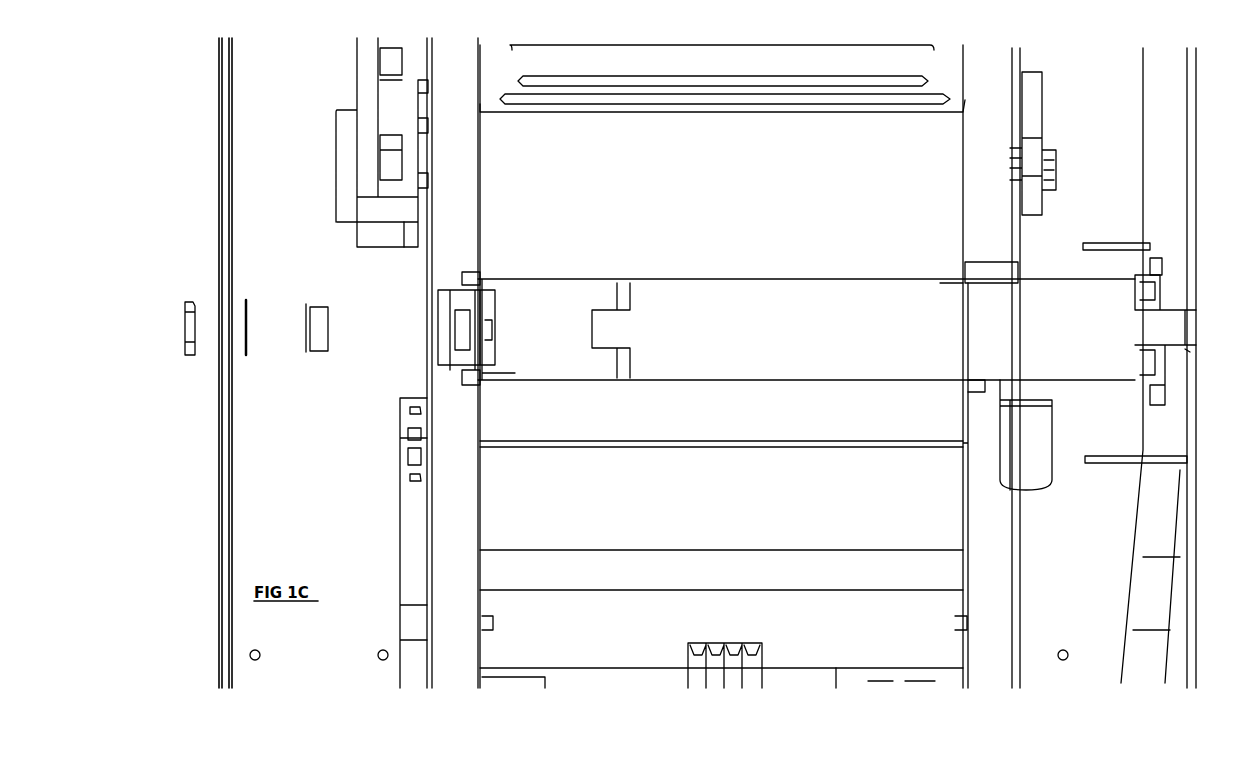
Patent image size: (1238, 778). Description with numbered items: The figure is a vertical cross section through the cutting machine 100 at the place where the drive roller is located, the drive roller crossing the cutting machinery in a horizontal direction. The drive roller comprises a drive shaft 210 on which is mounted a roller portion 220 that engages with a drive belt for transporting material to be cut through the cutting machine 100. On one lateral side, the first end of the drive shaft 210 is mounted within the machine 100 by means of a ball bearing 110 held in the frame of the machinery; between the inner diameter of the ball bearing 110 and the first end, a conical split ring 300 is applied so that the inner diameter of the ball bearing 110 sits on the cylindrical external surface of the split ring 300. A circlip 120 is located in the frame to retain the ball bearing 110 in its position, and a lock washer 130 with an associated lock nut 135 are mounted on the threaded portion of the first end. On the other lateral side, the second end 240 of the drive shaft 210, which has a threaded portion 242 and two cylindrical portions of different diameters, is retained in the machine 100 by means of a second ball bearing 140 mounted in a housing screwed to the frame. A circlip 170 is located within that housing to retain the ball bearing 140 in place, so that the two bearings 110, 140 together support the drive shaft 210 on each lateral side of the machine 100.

The cutting machine 100 is at (756, 527).
The ball bearing 110 is at (462, 268).
The circlip 120 is at (460, 350).
The lock washer 130 is at (252, 300).
The lock nut 135 is at (189, 360).
The ball bearing 140 is at (1143, 275).
The circlip 170 is at (1178, 258).
The drive shaft 210 is at (750, 354).
The roller portion 220 is at (725, 262).
The second end 240 is at (1172, 328).
The threaded portion 242 is at (1188, 352).
The conical split ring 300 is at (319, 356).